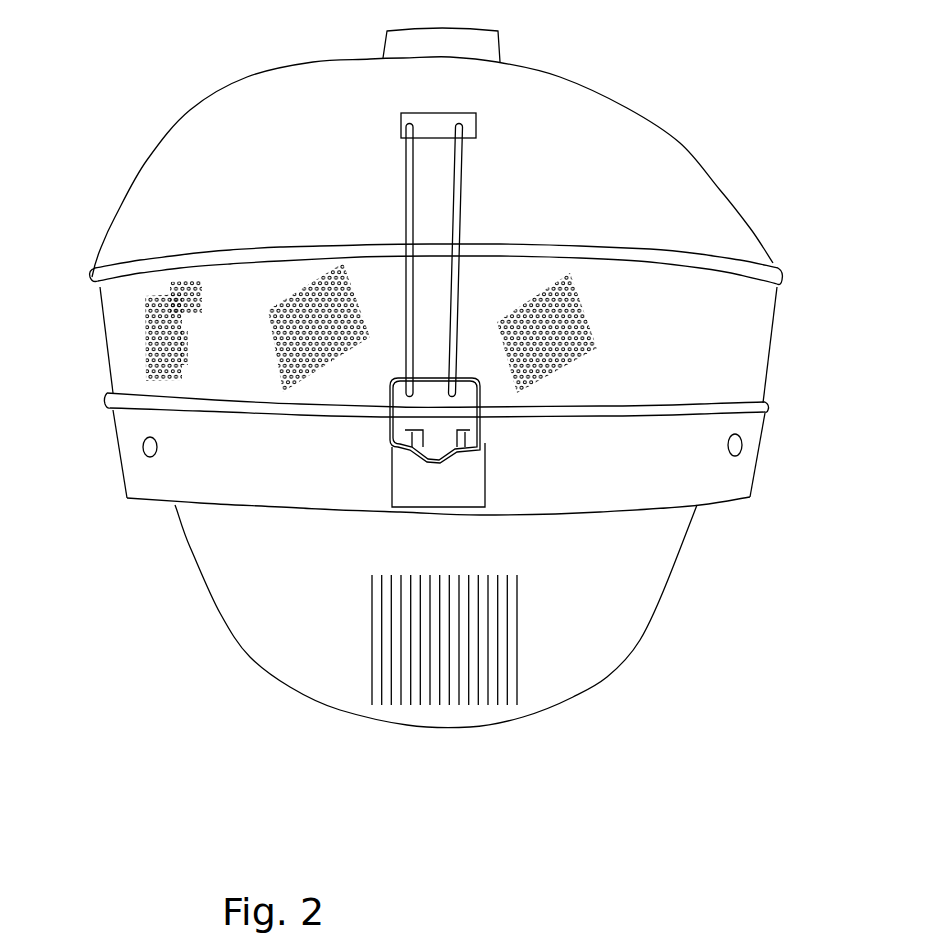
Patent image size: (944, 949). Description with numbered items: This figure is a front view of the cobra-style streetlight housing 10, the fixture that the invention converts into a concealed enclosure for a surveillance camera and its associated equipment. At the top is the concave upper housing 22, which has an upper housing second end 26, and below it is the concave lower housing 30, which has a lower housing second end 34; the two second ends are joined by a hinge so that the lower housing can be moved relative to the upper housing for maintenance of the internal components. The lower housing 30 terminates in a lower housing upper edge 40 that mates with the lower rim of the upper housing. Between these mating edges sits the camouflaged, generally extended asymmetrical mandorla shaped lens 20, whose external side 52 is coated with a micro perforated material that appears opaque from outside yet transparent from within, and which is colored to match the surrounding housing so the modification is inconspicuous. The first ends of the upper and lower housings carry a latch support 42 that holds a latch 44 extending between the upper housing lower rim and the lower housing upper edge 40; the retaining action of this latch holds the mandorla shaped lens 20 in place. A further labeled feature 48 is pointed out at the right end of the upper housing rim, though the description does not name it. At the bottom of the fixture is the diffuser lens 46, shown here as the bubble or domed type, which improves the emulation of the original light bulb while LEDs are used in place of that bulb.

The cobra-style streetlight housing 10 is at (62, 136).
The mandorla shaped lens 20 is at (233, 362).
The concave upper housing 22 is at (678, 142).
The upper housing second end 26 is at (326, 185).
The concave lower housing 30 is at (760, 468).
The lower housing second end 34 is at (603, 492).
The lower housing upper edge 40 is at (707, 403).
The latch support 42 is at (398, 121).
The latch 44 is at (467, 187).
The diffuser lens 46 is at (578, 693).
The lid rim 48 is at (777, 288).
The external side 52 is at (623, 390).